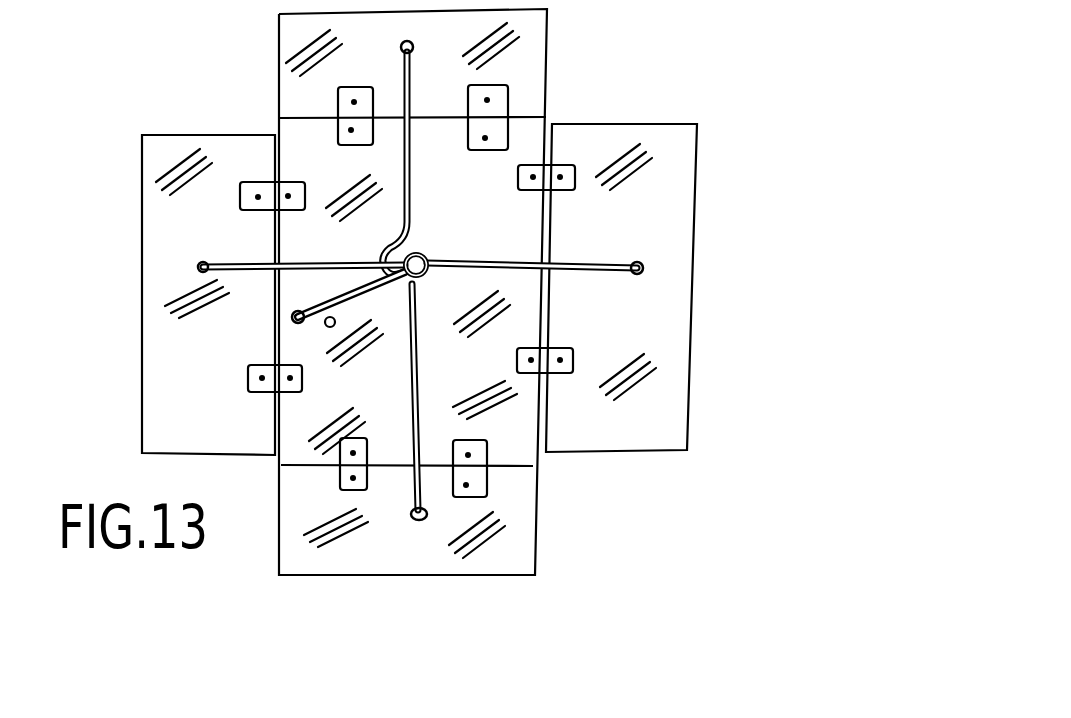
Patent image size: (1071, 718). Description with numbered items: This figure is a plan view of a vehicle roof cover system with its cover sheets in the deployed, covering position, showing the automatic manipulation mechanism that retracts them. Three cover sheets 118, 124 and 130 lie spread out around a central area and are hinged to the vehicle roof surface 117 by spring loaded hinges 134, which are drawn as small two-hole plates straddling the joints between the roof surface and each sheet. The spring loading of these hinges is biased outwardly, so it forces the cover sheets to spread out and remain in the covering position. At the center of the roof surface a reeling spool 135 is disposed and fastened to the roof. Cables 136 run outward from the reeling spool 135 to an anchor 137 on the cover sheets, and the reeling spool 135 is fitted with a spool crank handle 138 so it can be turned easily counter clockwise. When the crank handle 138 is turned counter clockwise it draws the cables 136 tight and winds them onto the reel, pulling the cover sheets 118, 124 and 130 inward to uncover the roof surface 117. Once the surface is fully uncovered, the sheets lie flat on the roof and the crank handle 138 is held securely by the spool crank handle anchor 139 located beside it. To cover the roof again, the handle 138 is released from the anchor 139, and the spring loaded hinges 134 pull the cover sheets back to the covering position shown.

The vehicle roof surface 117 is at (528, 130).
The cover sheet 118 is at (663, 152).
The cover sheet 124 is at (512, 508).
The cover sheet 130 is at (295, 30).
The spring loaded hinge 134 is at (573, 357).
The reeling spool 135 is at (447, 257).
The cable 136 is at (427, 422).
The anchor 137 is at (643, 268).
The spool crank handle 138 is at (297, 317).
The spool crank handle anchor 139 is at (315, 330).